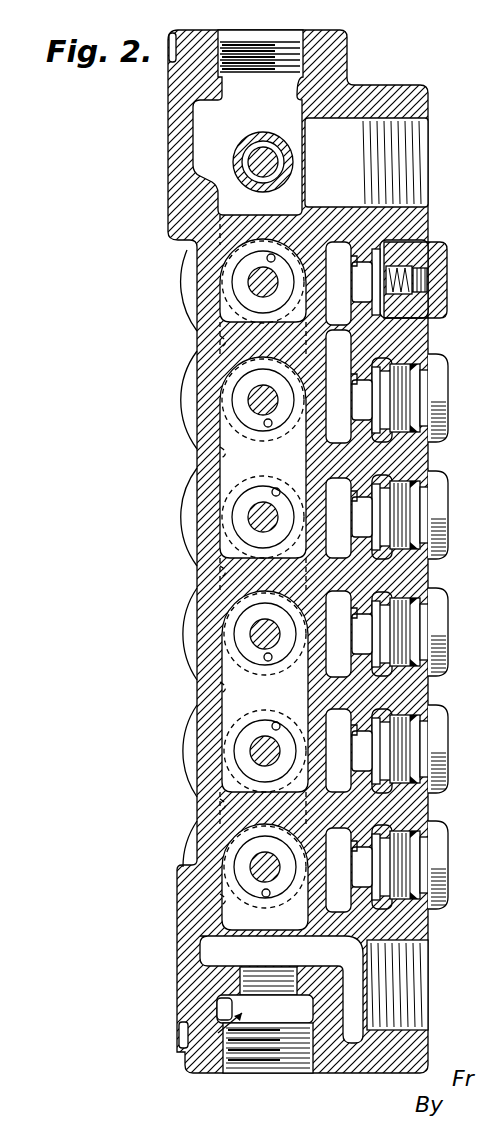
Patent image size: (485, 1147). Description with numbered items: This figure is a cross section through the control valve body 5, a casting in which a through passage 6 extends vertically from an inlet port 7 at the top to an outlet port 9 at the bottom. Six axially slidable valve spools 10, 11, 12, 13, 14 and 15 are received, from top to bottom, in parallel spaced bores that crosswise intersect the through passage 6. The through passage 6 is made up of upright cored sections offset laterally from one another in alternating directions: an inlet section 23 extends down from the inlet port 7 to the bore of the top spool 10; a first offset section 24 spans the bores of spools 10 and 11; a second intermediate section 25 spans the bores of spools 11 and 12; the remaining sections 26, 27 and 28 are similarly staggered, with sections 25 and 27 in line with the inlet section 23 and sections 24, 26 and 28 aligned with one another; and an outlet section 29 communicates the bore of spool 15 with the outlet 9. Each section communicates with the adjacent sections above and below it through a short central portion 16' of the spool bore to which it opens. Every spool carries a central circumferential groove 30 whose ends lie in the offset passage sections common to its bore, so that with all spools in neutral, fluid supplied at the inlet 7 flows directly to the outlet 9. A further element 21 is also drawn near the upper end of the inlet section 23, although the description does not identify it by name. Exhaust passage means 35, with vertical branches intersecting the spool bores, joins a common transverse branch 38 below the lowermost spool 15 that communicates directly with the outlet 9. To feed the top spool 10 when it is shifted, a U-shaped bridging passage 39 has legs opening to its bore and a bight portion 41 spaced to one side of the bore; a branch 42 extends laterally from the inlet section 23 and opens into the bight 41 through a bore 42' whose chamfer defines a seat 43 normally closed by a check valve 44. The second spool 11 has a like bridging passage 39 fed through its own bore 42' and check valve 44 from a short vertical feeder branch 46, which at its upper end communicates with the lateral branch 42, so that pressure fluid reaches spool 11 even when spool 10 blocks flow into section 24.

The body 5 is at (398, 82).
The through passage 6 is at (250, 27).
The inlet port 7 is at (280, 52).
The outlet port 9 is at (243, 1050).
The valve spool 10 is at (258, 272).
The valve spool 11 is at (262, 385).
The valve spool 12 is at (262, 500).
The valve spool 13 is at (263, 620).
The valve spool 14 is at (264, 735).
The valve spool 15 is at (266, 852).
The short central portion of bore 16' is at (270, 576).
The bushing 21 is at (248, 140).
The inlet section 23 is at (262, 232).
The first offset section 24 is at (220, 342).
The second intermediate section 25 is at (220, 453).
The through passage section 26 is at (220, 572).
The through passage section 27 is at (220, 688).
The through passage section 28 is at (220, 805).
The outlet section 29 is at (220, 900).
The circumferential groove 30 is at (270, 298).
The exhaust passage means 35 is at (218, 1033).
The transverse branch 38 is at (218, 1008).
The bridging passage 39 is at (420, 318).
The bight portion 41 is at (395, 230).
The branch 42 is at (330, 549).
The bore 42' is at (341, 559).
The seat 43 is at (360, 262).
The check valve 44 is at (372, 292).
The vertical feeder branch 46 is at (340, 342).